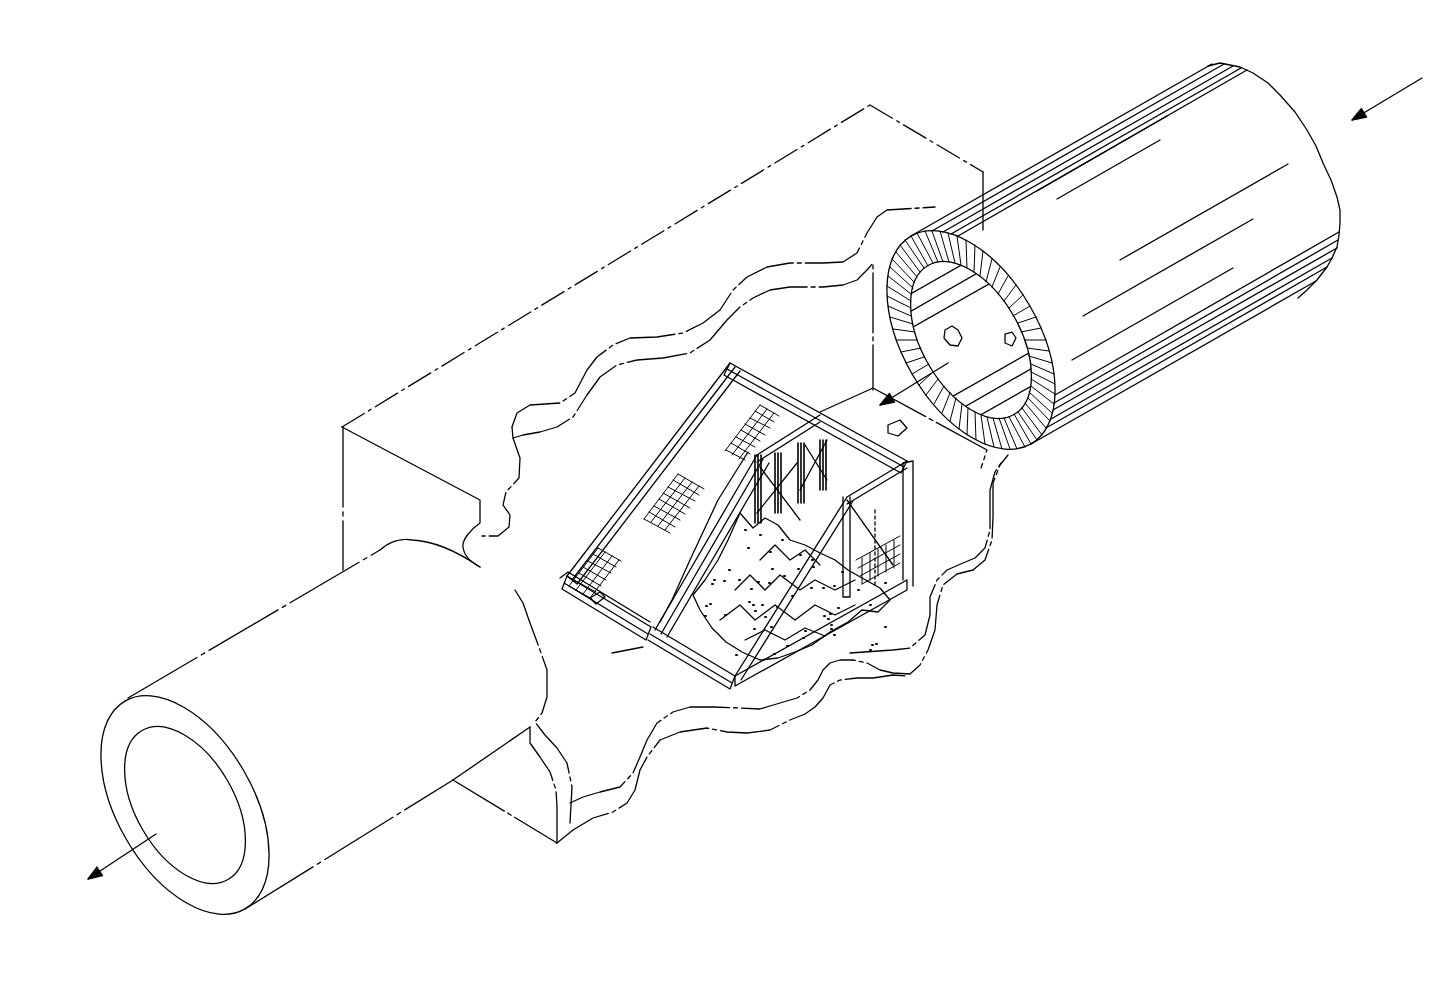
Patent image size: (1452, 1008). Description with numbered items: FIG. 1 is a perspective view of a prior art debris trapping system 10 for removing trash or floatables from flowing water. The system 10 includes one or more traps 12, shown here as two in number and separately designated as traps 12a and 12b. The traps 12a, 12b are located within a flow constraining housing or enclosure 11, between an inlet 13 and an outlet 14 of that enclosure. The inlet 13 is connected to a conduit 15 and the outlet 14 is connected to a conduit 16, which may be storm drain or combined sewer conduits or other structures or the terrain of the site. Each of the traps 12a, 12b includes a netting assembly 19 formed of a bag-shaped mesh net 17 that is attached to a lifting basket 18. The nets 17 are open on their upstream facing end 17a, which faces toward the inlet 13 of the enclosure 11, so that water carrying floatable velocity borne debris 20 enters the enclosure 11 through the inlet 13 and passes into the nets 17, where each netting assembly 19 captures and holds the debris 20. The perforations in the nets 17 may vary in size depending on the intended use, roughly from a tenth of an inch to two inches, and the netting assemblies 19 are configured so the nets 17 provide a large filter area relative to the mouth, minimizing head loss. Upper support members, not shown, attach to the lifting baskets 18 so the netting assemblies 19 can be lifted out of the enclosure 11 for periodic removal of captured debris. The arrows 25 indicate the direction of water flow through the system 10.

The system 10 is at (513, 235).
The flow constraining housing or enclosure 11 is at (397, 390).
The traps 12 is at (643, 436).
The trap 12a is at (785, 383).
The trap 12b is at (857, 417).
The inlet 13 is at (1015, 318).
The outlet 14 is at (515, 590).
The conduit 15 is at (1218, 182).
The conduit 16 is at (353, 716).
The bag-shaped mesh net 17 is at (706, 466).
The upstream facing end 17a is at (877, 517).
The lifting basket 18 is at (847, 592).
The netting assembly 19 is at (627, 583).
The floatable velocity borne debris 20 is at (800, 607).
The arrows 25 is at (1387, 99).